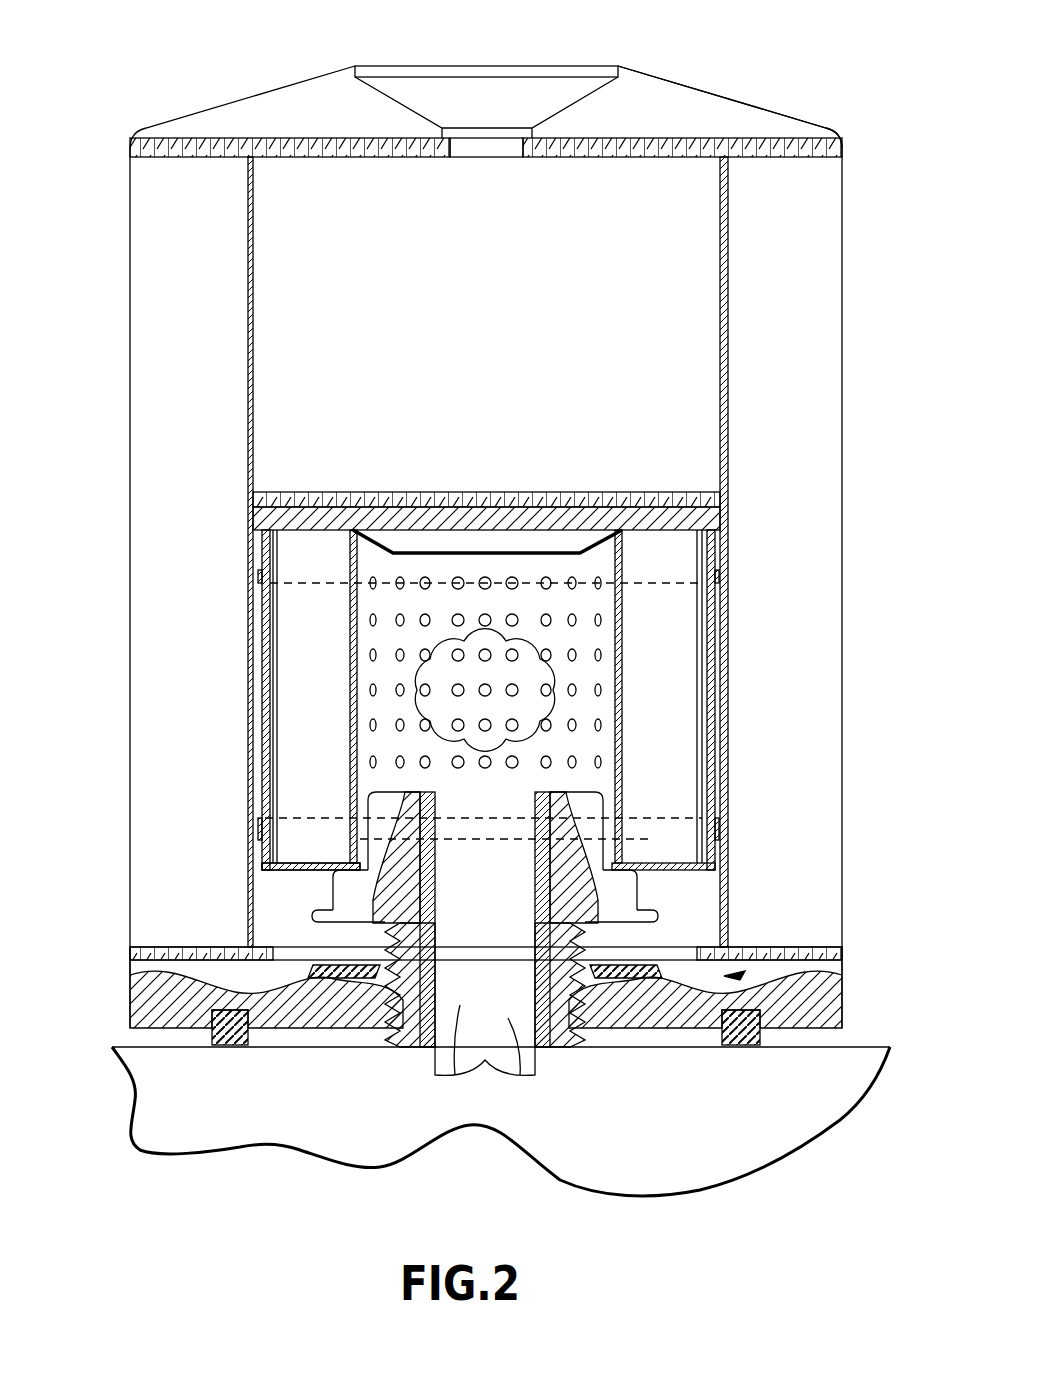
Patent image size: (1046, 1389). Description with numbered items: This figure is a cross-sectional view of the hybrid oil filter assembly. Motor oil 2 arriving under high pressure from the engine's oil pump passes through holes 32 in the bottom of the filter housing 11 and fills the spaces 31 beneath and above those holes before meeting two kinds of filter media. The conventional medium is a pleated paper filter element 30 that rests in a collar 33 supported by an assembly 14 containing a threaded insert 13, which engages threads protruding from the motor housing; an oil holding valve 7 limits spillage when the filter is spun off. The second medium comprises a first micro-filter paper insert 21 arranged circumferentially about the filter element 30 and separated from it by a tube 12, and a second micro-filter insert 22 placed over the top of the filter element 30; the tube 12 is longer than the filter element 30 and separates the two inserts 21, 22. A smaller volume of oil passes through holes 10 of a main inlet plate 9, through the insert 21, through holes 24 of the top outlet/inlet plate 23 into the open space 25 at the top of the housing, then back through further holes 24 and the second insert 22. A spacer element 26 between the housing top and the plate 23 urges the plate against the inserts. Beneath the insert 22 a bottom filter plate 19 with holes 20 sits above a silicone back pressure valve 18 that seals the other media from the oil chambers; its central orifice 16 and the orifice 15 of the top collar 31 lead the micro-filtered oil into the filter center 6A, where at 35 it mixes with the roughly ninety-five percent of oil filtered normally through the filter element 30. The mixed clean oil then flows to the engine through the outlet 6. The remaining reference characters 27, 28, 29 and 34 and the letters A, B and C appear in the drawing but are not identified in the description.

The motor oil 2 is at (363, 1092).
The conduit or outlet 6 is at (463, 1115).
The filter center region 6A is at (415, 686).
The oil holding valve 7 is at (280, 1047).
The main inlet plate 9 is at (842, 962).
The holes 10 is at (700, 953).
The filter housing 11 is at (216, 110).
The tube 12 is at (728, 250).
The threaded insert 13 is at (385, 935).
The assembly 14 is at (277, 905).
The outlet orifice 15 is at (268, 560).
The centrally located orifice 16 is at (264, 508).
The back pressure valve 18 is at (712, 520).
The bottom filter plate 19 is at (705, 500).
The holes 20 is at (640, 500).
The first micro-filter paper element or insert 21 is at (790, 742).
The second micro-filter paper element or insert 22 is at (670, 330).
The top outlet/inlet plate 23 is at (840, 150).
The holes 24 is at (806, 158).
The open space 25 is at (690, 110).
The spacer element 26 is at (432, 90).
The inlet opening 27 is at (490, 147).
The perforated cylinder 28 is at (379, 696).
The annular gap 29 is at (702, 650).
The filter element 30 is at (655, 722).
The spaces 31 is at (300, 915).
The holes 32 is at (322, 1047).
The collar 33 is at (345, 890).
The step 34 is at (368, 860).
The mixing location 35 is at (372, 660).
The air flow A is at (622, 995).
The air flow B is at (508, 1030).
The air flow C is at (512, 540).